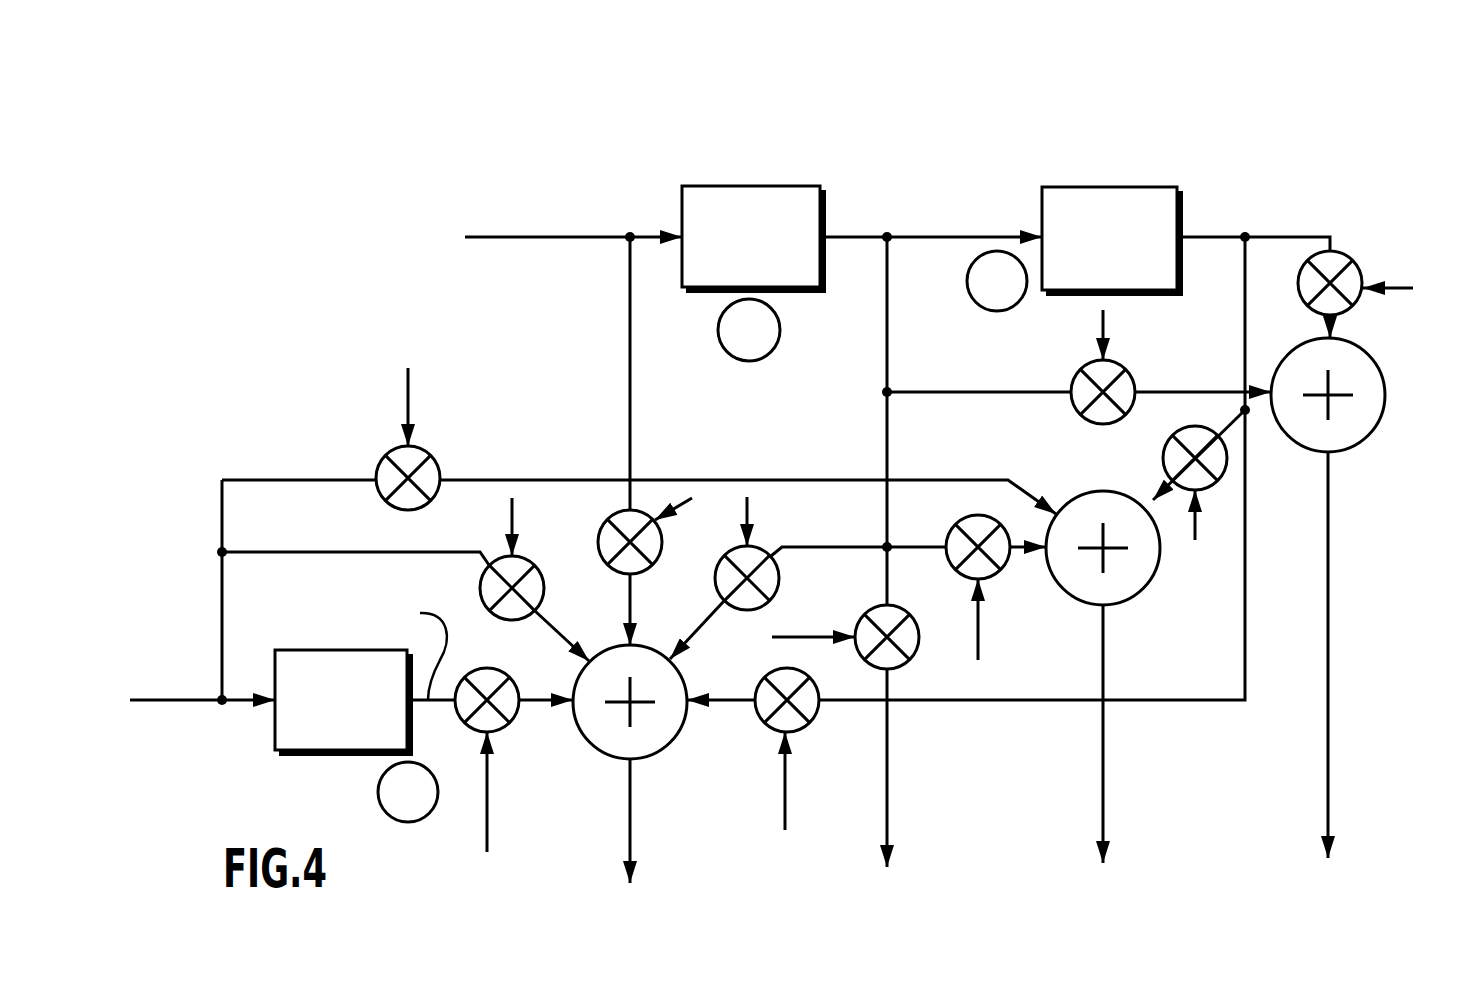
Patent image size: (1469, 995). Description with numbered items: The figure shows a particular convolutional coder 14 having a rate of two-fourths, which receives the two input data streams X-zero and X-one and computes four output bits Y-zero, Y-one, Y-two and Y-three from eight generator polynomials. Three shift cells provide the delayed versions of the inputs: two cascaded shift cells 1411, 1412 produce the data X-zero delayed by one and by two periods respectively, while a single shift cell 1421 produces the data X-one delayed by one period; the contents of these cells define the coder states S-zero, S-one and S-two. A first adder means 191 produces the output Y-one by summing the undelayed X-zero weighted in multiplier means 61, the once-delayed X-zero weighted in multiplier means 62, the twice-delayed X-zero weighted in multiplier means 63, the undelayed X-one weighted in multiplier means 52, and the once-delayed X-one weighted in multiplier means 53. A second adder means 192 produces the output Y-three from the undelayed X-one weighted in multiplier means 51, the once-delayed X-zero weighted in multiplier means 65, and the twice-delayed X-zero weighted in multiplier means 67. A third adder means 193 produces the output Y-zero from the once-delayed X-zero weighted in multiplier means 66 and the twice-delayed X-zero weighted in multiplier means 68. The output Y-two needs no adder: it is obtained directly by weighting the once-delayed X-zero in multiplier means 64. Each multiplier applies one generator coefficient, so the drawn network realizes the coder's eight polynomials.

The digital filter 14 is at (236, 346).
The shift cell 1411 is at (800, 186).
The shift cell 1412 is at (1070, 187).
The shift cell 1421 is at (355, 750).
The multiplier means 51 is at (395, 508).
The multiplier means 52 is at (485, 608).
The multiplier means 53 is at (507, 725).
The multiplier means 61 is at (625, 574).
The multiplier means 62 is at (716, 562).
The multiplier means 63 is at (778, 668).
The multiplier means 64 is at (919, 632).
The multiplier means 65 is at (972, 516).
The multiplier means 66 is at (1085, 362).
The multiplier means 67 is at (1172, 434).
The multiplier means 68 is at (1340, 252).
The first adder means 191 is at (683, 727).
The second adder means 192 is at (1140, 593).
The third adder means 193 is at (1380, 418).